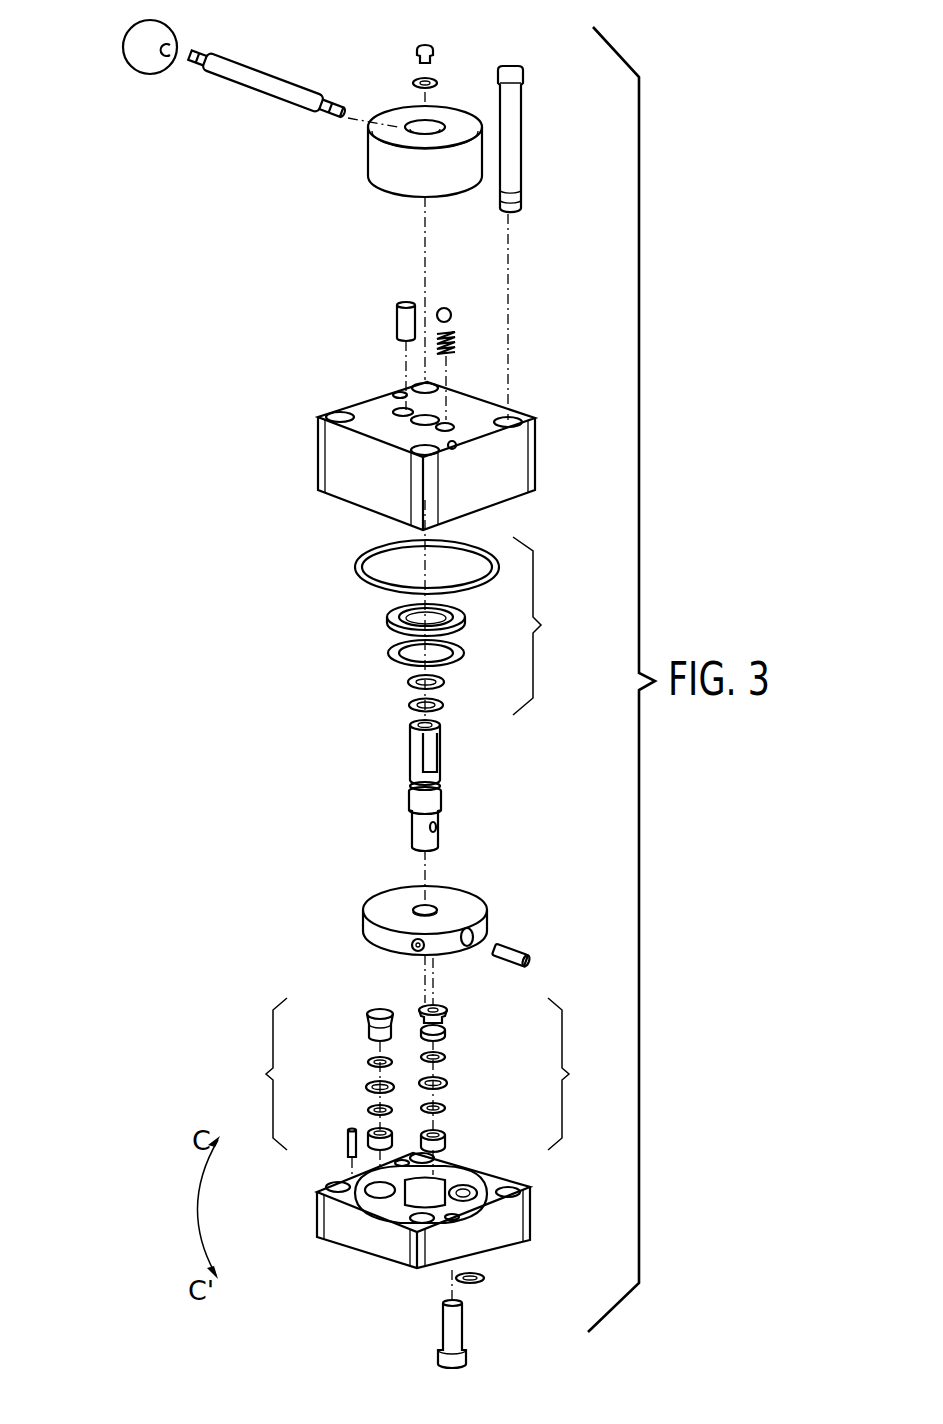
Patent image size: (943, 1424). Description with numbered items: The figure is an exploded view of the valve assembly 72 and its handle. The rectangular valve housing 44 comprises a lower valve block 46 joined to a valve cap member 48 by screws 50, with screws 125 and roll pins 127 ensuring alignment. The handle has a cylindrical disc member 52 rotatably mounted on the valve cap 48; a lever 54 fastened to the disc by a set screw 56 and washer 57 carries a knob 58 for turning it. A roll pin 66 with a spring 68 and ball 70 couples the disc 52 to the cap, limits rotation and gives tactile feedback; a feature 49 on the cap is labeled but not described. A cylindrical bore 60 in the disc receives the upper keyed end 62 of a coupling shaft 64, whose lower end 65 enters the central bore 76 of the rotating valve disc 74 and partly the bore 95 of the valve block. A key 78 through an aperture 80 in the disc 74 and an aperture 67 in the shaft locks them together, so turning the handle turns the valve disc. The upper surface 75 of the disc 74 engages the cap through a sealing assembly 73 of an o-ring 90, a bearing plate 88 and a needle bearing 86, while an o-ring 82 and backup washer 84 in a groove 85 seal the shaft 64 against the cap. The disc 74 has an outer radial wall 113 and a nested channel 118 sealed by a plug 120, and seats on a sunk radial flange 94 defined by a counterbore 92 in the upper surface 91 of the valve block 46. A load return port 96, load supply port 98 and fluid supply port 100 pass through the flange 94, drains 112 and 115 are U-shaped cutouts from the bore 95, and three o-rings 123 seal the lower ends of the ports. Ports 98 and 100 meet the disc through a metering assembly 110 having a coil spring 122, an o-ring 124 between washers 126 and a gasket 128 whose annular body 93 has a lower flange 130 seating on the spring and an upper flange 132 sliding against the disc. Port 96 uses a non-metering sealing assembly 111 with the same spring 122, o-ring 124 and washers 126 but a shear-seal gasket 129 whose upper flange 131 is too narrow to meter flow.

The valve housing 44 is at (543, 455).
The lower valve block 46 is at (541, 1230).
The valve cap member 48 is at (530, 417).
The hole 49 is at (410, 422).
The screws 50 is at (512, 65).
The cylindrical disc member 52 is at (457, 108).
The lever 54 is at (260, 72).
The set screw 56 is at (416, 50).
The washer 57 is at (413, 83).
The knob 58 is at (124, 30).
The cylindrical bore 60 is at (408, 133).
The upper keyed end 62 is at (441, 750).
The coupling shaft 64 is at (431, 794).
The lower end 65 is at (415, 849).
The roll pin 66 is at (396, 322).
The aperture 67 is at (429, 826).
The spring 68 is at (458, 342).
The ball 70 is at (446, 308).
The valve assembly 72 is at (532, 856).
The sealing assembly 73 is at (433, 624).
The valve disc 74 is at (363, 912).
The upper surface 75 is at (386, 903).
The central bore 76 is at (430, 907).
The key 78 is at (528, 951).
The aperture 80 is at (440, 910).
The o-ring 82 is at (410, 704).
The backup washer 84 is at (410, 683).
The groove 85 is at (442, 785).
The needle bearing 86 is at (390, 658).
The bearing plate 88 is at (388, 621).
The o-ring 90 is at (365, 562).
The upper surface 91 is at (485, 1205).
The counterbore 92 is at (472, 1197).
The annular body 93 is at (423, 1024).
The radial flange 94 is at (465, 1183).
The bore 95 is at (440, 1178).
The first port 96 is at (385, 1210).
The second port 98 is at (444, 1215).
The third port 100 is at (478, 1200).
The metering assembly 110 is at (498, 1066).
The non-metering sealing assembly 111 is at (312, 1071).
The drain 112 is at (410, 1224).
The outer radial wall 113 is at (492, 922).
The drain 115 is at (352, 1200).
The nested channel 118 is at (412, 945).
The plug 120 is at (418, 948).
The coil spring 122 is at (368, 1132).
The o-rings 123 is at (480, 1284).
The sealing o-ring 124 is at (366, 1087).
The screws 125 is at (443, 1328).
The washers 126 is at (368, 1062).
The roll pins 127 is at (350, 1153).
The gasket 128 is at (452, 1024).
The gasket 129 is at (362, 1030).
The lower flange 130 is at (446, 1033).
The upper flange 131 is at (378, 1010).
The upper flange 132 is at (441, 1009).